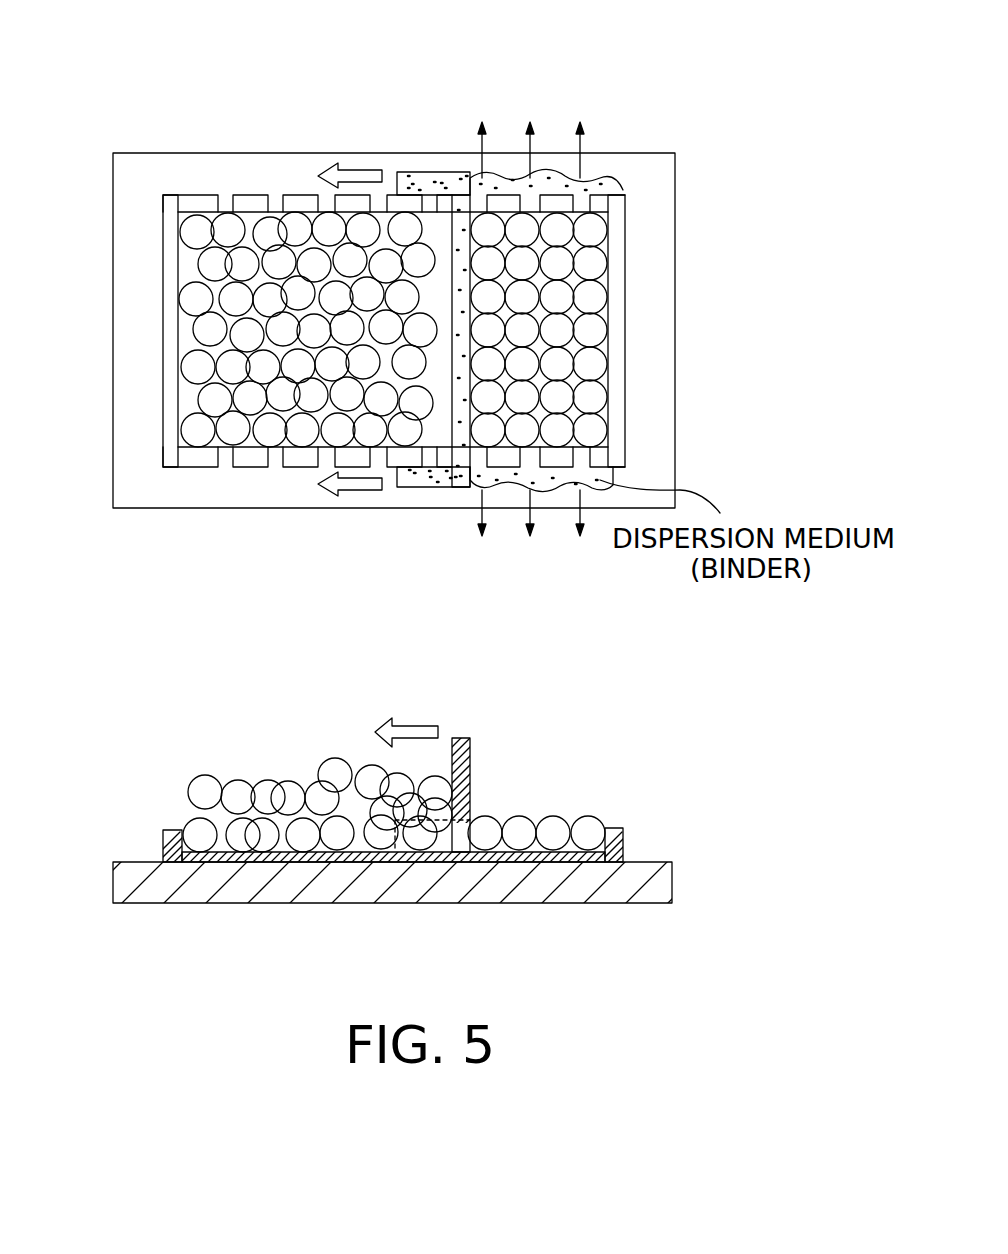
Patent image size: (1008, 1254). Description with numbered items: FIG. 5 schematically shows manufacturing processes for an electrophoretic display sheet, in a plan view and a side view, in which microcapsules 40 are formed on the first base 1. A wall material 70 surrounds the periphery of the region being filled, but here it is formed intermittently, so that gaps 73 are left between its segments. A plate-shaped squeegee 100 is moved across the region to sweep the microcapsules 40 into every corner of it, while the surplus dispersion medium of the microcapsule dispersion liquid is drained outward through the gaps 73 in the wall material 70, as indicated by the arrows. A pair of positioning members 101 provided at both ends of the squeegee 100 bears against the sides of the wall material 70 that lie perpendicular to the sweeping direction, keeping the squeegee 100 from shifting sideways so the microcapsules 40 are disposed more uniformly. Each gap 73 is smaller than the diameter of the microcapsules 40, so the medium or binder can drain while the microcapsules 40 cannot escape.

The first base 1 is at (676, 215).
The microcapsules 40 is at (196, 299).
The wall material 70 is at (625, 292).
The gaps 73 is at (275, 193).
The squeegee 100 is at (493, 487).
The positioning members 101 is at (437, 174).